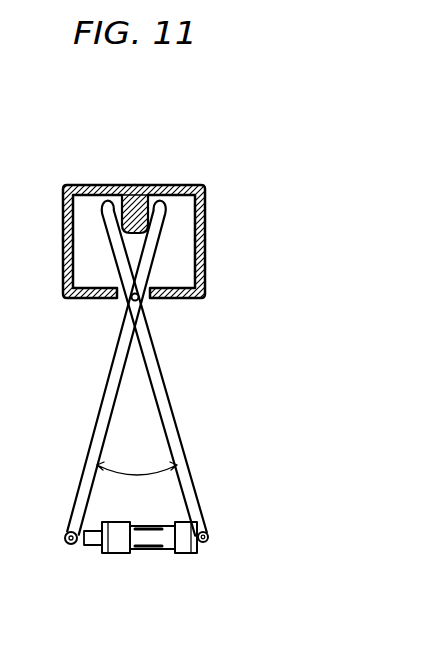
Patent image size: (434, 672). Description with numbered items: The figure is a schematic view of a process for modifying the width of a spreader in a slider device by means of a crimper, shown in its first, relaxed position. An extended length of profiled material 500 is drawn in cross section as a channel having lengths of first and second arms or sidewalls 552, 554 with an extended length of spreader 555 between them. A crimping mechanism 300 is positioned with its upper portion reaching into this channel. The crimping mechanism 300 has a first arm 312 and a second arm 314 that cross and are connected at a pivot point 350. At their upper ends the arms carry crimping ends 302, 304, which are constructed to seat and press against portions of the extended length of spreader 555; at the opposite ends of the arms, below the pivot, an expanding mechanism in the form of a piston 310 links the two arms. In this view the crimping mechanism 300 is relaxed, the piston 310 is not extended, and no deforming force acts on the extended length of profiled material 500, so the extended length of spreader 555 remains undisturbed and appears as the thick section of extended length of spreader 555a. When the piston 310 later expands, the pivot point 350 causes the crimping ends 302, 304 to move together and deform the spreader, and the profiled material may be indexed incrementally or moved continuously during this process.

The crimping mechanism 300 is at (167, 406).
The crimping end 302 is at (99, 187).
The crimping end 304 is at (176, 186).
The piston 310 is at (126, 555).
The first arm 312 is at (90, 430).
The second arm 314 is at (170, 390).
The pivot point 350 is at (123, 306).
The extended length of profiled material 500 is at (157, 210).
The first sidewall 552 is at (66, 271).
The second sidewall 554 is at (205, 270).
The extended length of spreader 555 is at (143, 187).
The thick section of extended length of spreader 555a is at (128, 187).